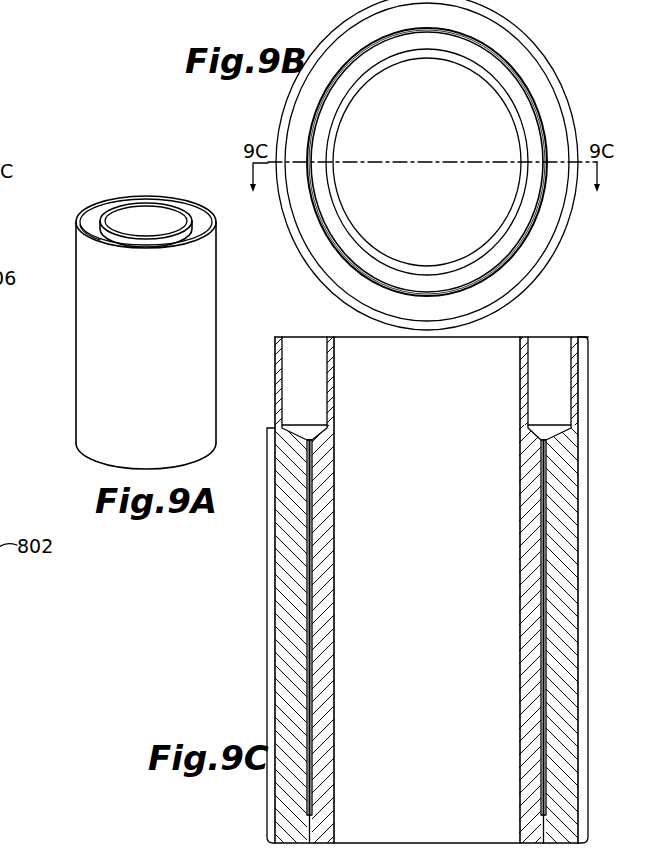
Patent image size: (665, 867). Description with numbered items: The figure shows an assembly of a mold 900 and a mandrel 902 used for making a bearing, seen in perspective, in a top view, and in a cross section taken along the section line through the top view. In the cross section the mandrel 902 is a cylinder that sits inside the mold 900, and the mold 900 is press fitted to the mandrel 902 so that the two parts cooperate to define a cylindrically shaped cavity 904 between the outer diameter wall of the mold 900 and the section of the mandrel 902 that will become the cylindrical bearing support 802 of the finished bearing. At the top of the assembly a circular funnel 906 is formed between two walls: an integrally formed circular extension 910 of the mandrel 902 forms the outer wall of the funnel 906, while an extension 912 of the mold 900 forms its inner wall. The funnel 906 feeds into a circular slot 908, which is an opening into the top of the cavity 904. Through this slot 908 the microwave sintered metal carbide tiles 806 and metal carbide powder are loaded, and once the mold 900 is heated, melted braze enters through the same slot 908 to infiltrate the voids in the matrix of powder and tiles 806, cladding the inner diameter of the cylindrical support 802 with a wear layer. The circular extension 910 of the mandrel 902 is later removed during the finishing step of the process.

In FIG. 9B, the mold 900 is at (563, 129).
In FIG. 9C, the mold 900 is at (340, 534).
In FIG. 9A, the mandrel 902 is at (86, 378).
In FIG. 9C, the mandrel 902 is at (589, 586).
In FIG. 9C, the cylindrically shaped cavity 904 is at (314, 452).
In FIG. 9A, the circular funnel 906 is at (90, 228).
In FIG. 9C, the circular funnel 906 is at (295, 348).
In FIG. 9B, the circular slot 908 is at (437, 280).
In FIG. 9C, the circular slot 908 is at (306, 430).
In FIG. 9A, the circular extension of the mandrel 910 is at (222, 224).
In FIG. 9C, the circular extension of the mandrel 910 is at (272, 340).
In FIG. 9A, the extension of the mold 912 is at (168, 218).
In FIG. 9B, the extension of the mold 912 is at (518, 200).
In FIG. 9C, the extension of the mold 912 is at (337, 340).
In FIG. 9B, the microwave sintered metal carbide tiles 806 is at (512, 256).
In FIG. 9C, the cylindrical bearing support 802 is at (268, 632).